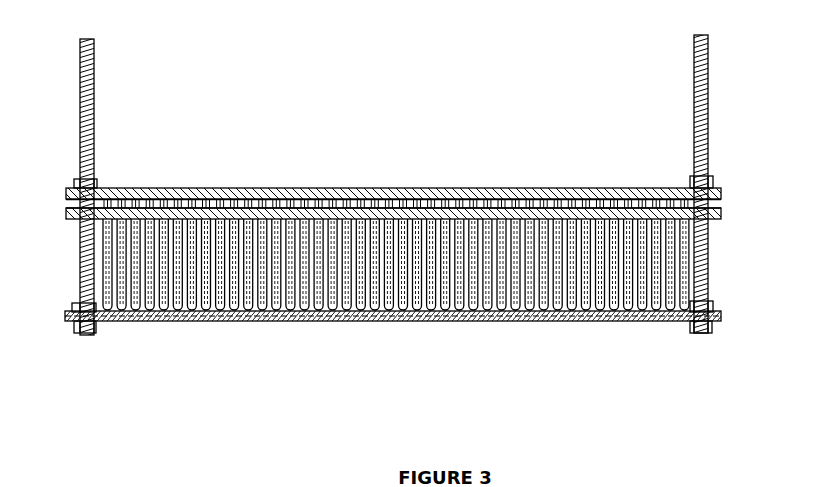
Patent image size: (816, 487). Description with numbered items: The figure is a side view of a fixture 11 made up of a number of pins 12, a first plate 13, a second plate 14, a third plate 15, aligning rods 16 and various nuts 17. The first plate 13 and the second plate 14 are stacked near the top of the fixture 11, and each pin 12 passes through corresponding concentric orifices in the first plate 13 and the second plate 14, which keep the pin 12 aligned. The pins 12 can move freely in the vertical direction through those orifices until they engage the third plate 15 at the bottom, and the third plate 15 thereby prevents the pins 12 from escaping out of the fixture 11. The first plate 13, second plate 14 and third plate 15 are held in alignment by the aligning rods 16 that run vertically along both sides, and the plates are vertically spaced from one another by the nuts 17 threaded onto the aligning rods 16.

The fixture 11 is at (462, 318).
The pins 12 is at (410, 179).
The first plate 13 is at (712, 180).
The second plate 14 is at (713, 211).
The third plate 15 is at (710, 305).
The aligning rods 16 is at (87, 137).
The nuts 17 is at (89, 172).